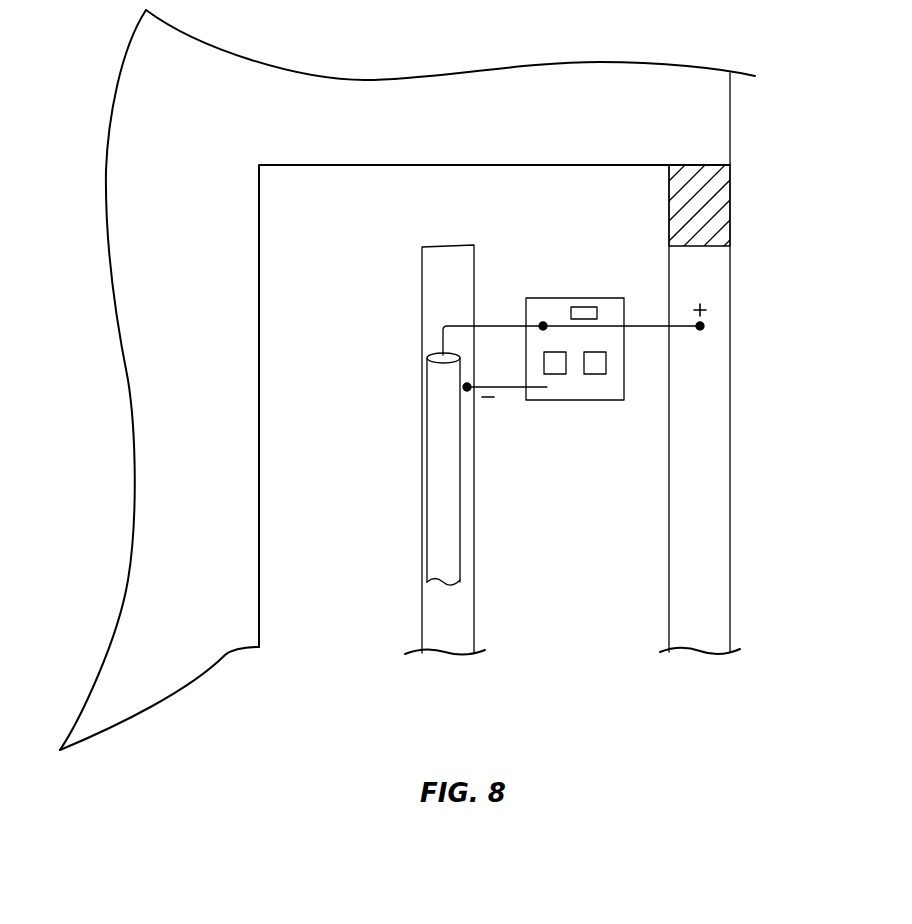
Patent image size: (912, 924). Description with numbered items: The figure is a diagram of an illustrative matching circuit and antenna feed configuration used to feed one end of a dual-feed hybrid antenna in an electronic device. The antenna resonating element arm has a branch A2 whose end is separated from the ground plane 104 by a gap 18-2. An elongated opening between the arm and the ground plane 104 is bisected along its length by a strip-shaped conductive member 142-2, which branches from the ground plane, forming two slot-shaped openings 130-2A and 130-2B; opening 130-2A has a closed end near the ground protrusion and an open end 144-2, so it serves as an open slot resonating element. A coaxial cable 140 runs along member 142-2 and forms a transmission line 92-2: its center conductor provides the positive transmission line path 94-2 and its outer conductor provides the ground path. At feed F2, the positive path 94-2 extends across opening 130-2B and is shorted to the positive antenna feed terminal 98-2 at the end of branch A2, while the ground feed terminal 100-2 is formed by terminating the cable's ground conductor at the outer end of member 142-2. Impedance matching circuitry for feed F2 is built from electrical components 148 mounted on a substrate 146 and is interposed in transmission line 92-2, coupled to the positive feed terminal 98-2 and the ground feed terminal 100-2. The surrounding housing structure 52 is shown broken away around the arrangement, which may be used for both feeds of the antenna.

The sheet / housing wall 52 is at (283, 424).
The ground plane 104 is at (243, 578).
The opening 130-2A is at (283, 500).
The opening 130-2B is at (643, 555).
The gap 18-2 is at (742, 165).
The open end 144-2 is at (417, 240).
The conductive member 142-2 is at (477, 612).
The coaxial cable 140 is at (435, 533).
The positive transmission line path 94-2 is at (490, 324).
The positive antenna feed terminal 98-2 is at (704, 326).
The ground antenna feed terminal 100-2 is at (470, 390).
The substrate 146 is at (605, 298).
The electrical components 148 is at (555, 374).
The transmission line 92-2 is at (534, 568).
The feed F2 is at (585, 238).
The branch A2 is at (715, 470).